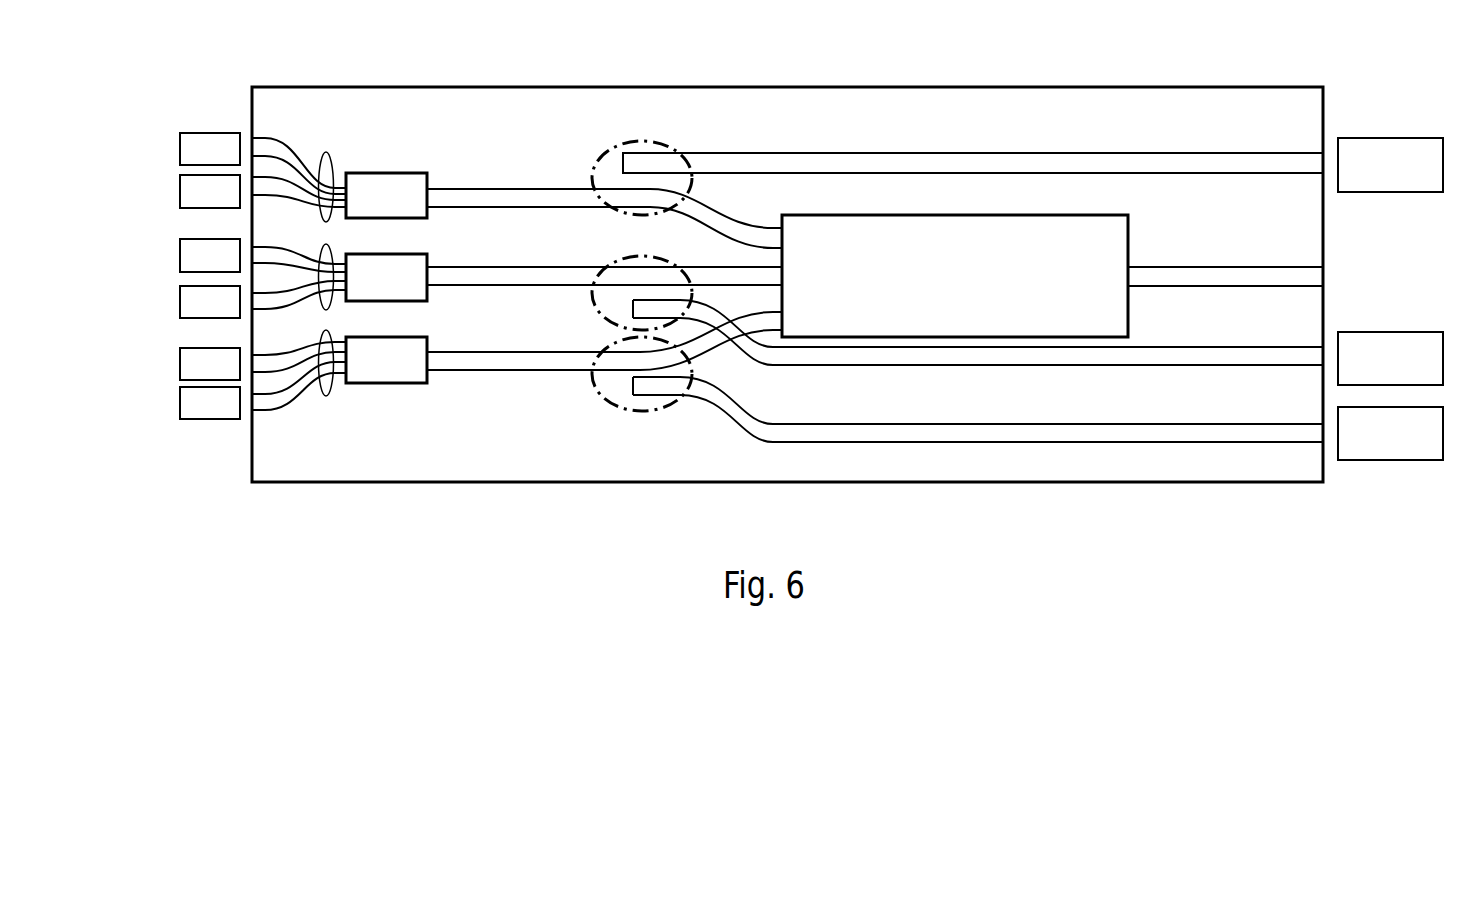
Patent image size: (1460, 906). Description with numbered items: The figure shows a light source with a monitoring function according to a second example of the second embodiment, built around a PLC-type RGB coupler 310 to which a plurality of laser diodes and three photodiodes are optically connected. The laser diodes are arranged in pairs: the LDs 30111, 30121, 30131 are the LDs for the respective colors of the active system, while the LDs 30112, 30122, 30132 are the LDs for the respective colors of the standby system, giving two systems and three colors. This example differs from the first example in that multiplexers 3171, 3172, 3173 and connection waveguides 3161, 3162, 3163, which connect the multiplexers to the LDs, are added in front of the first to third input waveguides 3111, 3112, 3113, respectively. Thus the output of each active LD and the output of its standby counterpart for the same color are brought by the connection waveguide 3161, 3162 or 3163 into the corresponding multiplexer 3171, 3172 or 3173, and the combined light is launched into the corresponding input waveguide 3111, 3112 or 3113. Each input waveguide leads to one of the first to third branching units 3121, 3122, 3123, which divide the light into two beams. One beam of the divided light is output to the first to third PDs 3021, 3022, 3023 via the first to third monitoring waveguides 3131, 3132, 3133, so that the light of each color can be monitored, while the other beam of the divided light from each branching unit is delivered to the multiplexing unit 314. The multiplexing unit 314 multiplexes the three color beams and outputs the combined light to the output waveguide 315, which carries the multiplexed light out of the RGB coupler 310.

The RGB coupler 310 is at (1158, 87).
The LD 30111 is at (180, 150).
The LD 30112 is at (180, 191).
The LD 30121 is at (180, 255).
The LD 30122 is at (180, 302).
The LD 30131 is at (180, 364).
The LD 30132 is at (180, 403).
The connection waveguide 3161 is at (322, 153).
The connection waveguide 3162 is at (338, 302).
The connection waveguide 3163 is at (322, 398).
The multiplexer 3171 is at (410, 173).
The multiplexer 3172 is at (415, 254).
The multiplexer 3173 is at (413, 384).
The first input waveguide 3111 is at (543, 197).
The second input waveguide 3112 is at (543, 280).
The third input waveguide 3113 is at (543, 365).
The first branching unit 3121 is at (672, 132).
The second branching unit 3122 is at (647, 248).
The third branching unit 3123 is at (667, 413).
The first monitoring waveguide 3131 is at (1192, 160).
The second monitoring waveguide 3132 is at (1193, 352).
The third monitoring waveguide 3133 is at (1193, 430).
The multiplexing unit 314 is at (1057, 215).
The output waveguide 315 is at (1193, 272).
The first PD 3021 is at (1392, 138).
The second PD 3022 is at (1392, 332).
The third PD 3023 is at (1395, 462).